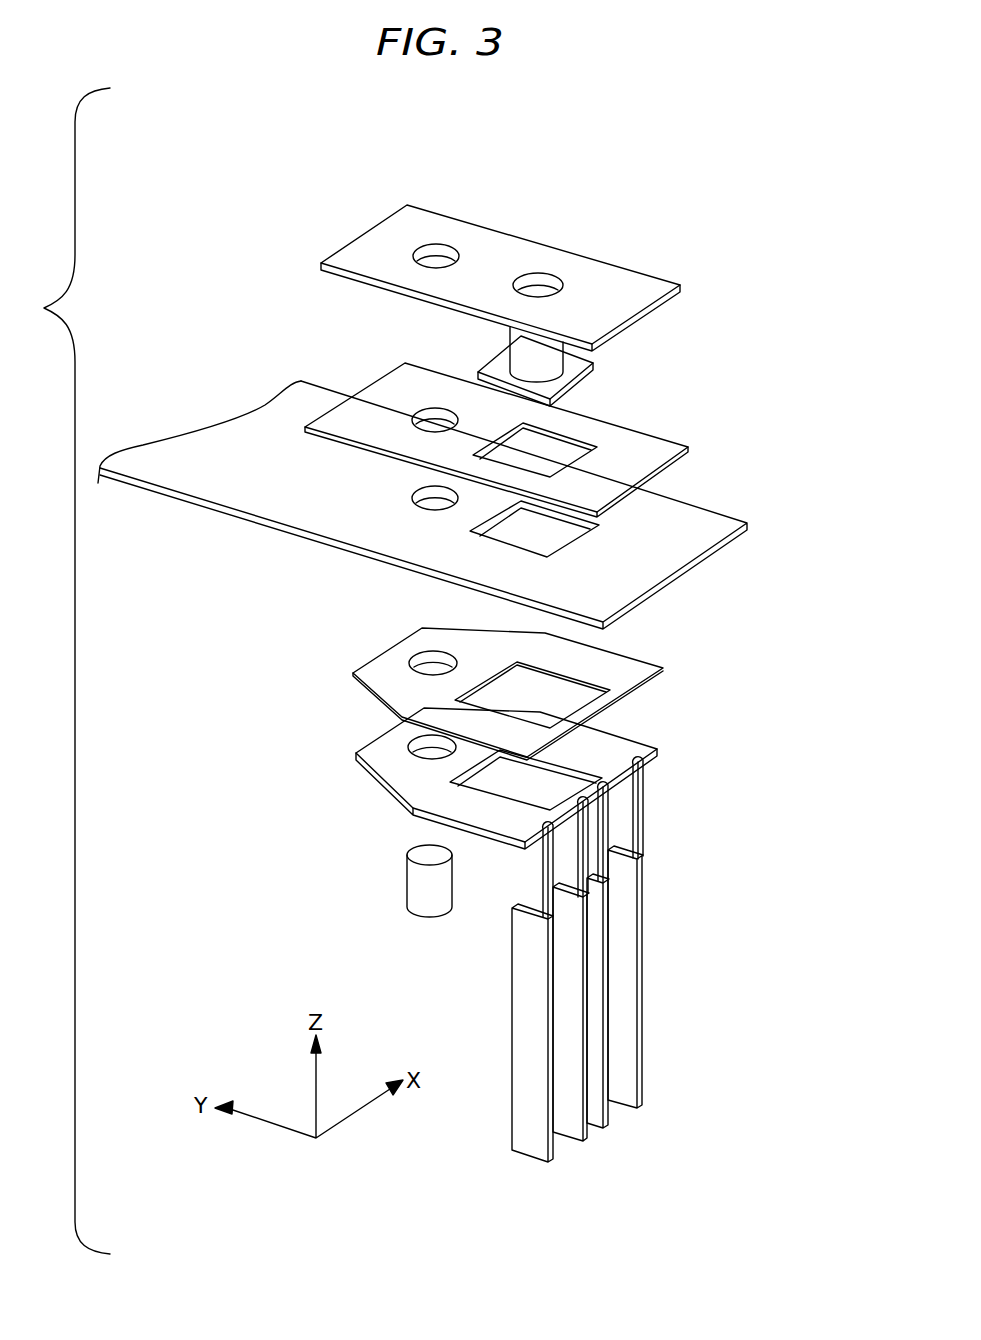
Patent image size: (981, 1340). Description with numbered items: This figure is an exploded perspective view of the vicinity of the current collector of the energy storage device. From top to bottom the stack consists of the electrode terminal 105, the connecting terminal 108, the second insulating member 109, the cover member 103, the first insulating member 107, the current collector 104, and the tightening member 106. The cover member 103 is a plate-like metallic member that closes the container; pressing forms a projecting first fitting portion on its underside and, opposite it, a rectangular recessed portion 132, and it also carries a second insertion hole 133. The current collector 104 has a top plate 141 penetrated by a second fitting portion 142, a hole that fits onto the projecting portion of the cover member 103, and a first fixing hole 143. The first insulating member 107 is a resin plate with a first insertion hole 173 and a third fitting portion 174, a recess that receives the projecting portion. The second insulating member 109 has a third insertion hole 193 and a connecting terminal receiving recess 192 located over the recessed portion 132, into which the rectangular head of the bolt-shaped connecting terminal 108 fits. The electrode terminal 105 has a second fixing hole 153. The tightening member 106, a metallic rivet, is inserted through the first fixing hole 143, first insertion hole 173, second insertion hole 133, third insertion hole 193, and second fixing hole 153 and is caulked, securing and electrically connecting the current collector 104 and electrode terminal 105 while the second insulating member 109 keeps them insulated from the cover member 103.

The cover member 103 is at (747, 523).
The current collector 104 is at (496, 933).
The electrode terminal 105 is at (680, 285).
The tightening member 106 is at (407, 880).
The first insulating member 107 is at (663, 668).
The connecting terminal 108 is at (595, 368).
The second insulating member 109 is at (688, 447).
The recessed portion 132 is at (513, 537).
The second insertion hole 133 is at (423, 502).
The top plate 141 is at (420, 782).
The second fitting portion 142 is at (583, 764).
The first fixing hole 143 is at (430, 747).
The second fixing hole 153 is at (431, 260).
The first insertion hole 173 is at (430, 667).
The third fitting portion 174 is at (558, 690).
The connecting terminal receiving recess 192 is at (567, 450).
The third insertion hole 193 is at (430, 421).